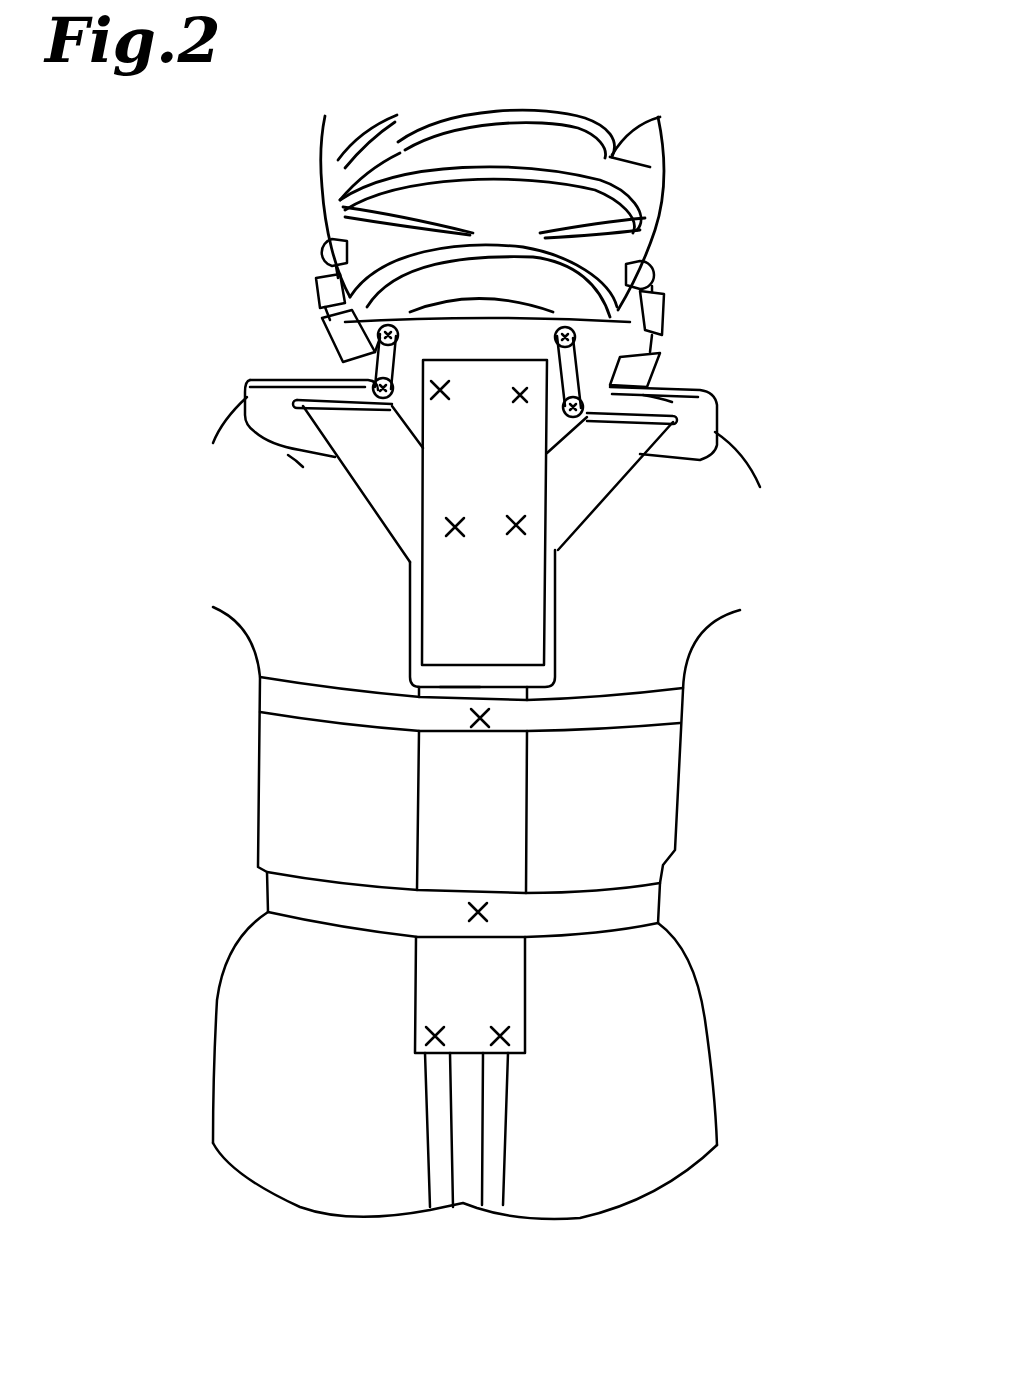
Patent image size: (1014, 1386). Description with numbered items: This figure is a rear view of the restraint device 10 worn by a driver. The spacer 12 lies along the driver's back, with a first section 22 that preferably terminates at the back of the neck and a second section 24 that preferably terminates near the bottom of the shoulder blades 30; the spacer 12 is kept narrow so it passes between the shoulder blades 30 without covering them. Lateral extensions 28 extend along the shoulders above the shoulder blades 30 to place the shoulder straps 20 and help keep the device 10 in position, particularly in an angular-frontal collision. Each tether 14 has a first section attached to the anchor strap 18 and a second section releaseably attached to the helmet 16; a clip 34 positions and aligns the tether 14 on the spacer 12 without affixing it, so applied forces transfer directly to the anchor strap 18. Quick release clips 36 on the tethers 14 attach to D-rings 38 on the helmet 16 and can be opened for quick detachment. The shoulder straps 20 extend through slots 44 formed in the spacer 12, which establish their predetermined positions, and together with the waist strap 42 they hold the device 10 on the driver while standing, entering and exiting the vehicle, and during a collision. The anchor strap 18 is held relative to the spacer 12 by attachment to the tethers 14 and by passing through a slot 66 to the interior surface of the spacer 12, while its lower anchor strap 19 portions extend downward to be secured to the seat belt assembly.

The restraint device 10 is at (212, 820).
The spacer 12 is at (557, 620).
The tether 14 is at (320, 337).
The helmet 16 is at (663, 130).
The anchor strap 18 is at (483, 975).
The anchor strap 19 is at (430, 1152).
The shoulder straps 20 is at (320, 420).
The first section 22 is at (540, 325).
The second section 24 is at (407, 623).
The lateral extensions 28 is at (247, 390).
The shoulder blades 30 is at (305, 546).
The clip 34 is at (565, 360).
The quick release clips 36 is at (313, 287).
The D-rings 38 is at (307, 247).
The waist strap 42 is at (357, 930).
The slots 44 is at (293, 467).
The slot 66 is at (457, 688).